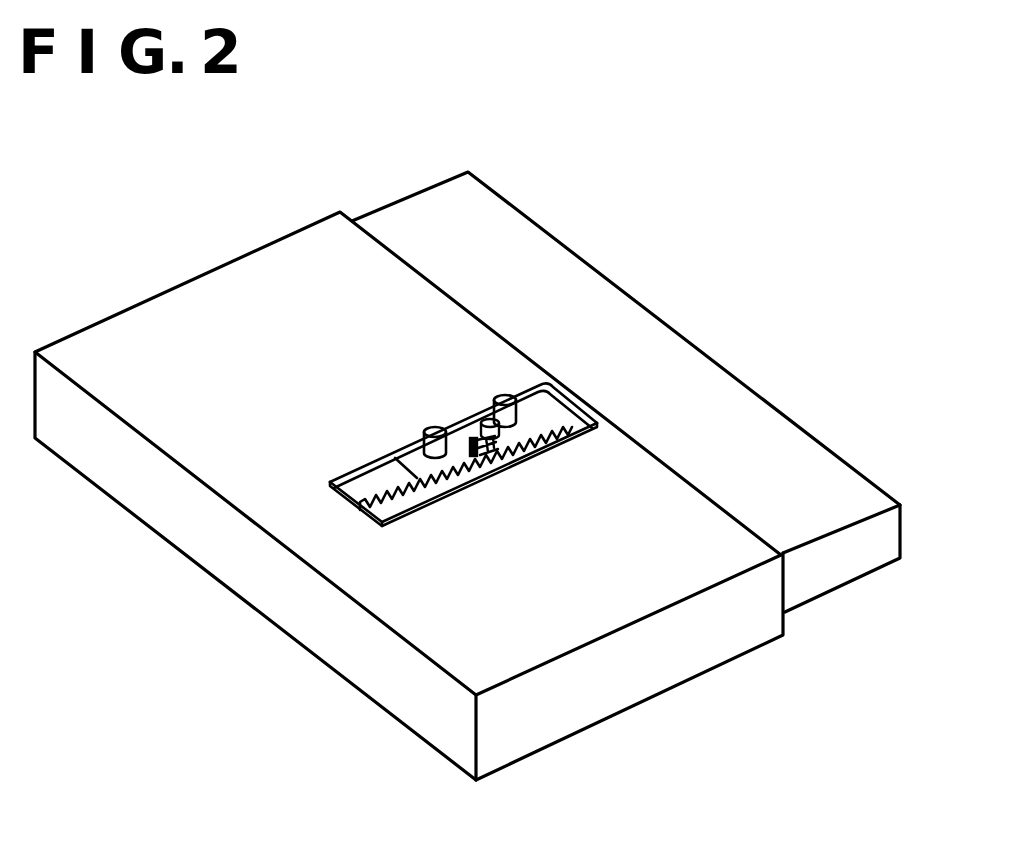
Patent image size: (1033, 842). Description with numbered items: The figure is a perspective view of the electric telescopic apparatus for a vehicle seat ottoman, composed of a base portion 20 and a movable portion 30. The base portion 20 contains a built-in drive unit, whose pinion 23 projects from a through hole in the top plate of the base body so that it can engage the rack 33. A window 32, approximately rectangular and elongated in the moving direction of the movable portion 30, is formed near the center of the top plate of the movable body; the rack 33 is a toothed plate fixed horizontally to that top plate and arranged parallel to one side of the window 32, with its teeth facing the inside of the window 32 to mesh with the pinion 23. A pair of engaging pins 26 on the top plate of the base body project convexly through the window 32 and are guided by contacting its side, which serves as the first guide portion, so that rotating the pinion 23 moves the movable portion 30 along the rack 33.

The base portion 20 is at (681, 332).
The movable portion 30 is at (232, 592).
The window 32 is at (334, 474).
The rack 33 is at (465, 473).
The engaging pins 26 is at (428, 430).
The pinion 23 is at (478, 415).